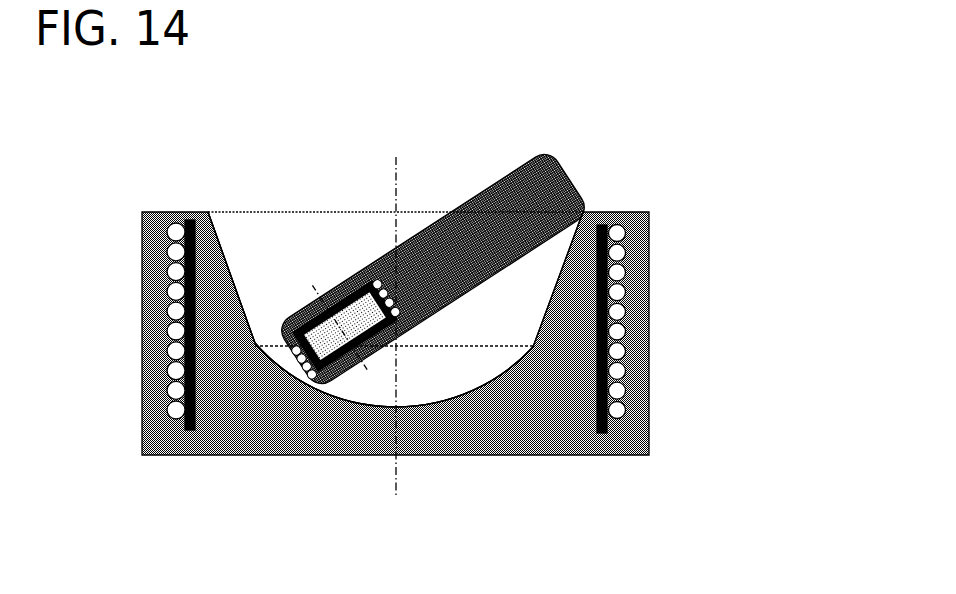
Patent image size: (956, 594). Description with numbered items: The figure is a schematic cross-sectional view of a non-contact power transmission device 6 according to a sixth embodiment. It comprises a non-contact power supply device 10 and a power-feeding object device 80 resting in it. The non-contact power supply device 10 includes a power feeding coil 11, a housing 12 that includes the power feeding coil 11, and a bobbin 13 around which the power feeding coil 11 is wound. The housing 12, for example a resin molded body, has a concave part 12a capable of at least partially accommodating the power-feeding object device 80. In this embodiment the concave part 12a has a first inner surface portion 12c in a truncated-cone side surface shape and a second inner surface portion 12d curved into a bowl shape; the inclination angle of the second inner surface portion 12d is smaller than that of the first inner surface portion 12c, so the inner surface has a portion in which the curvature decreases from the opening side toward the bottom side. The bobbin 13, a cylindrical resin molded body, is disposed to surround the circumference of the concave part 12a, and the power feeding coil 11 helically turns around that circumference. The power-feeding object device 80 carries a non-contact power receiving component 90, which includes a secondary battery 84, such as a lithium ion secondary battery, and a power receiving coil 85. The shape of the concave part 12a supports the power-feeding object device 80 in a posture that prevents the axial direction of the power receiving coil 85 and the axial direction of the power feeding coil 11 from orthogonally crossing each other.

The non-contact power transmission device 6 is at (489, 331).
The non-contact power supply device 10 is at (466, 317).
The power feeding coil 11 is at (612, 371).
The housing 12 is at (652, 247).
The concave part 12a is at (220, 220).
The first inner surface portion 12c is at (231, 272).
The second inner surface portion 12d is at (437, 403).
The bobbin 13 is at (607, 424).
The power-feeding object device 80 is at (491, 257).
The secondary battery 84 is at (345, 326).
The power receiving coil 85 is at (307, 303).
The non-contact power receiving component 90 is at (341, 257).